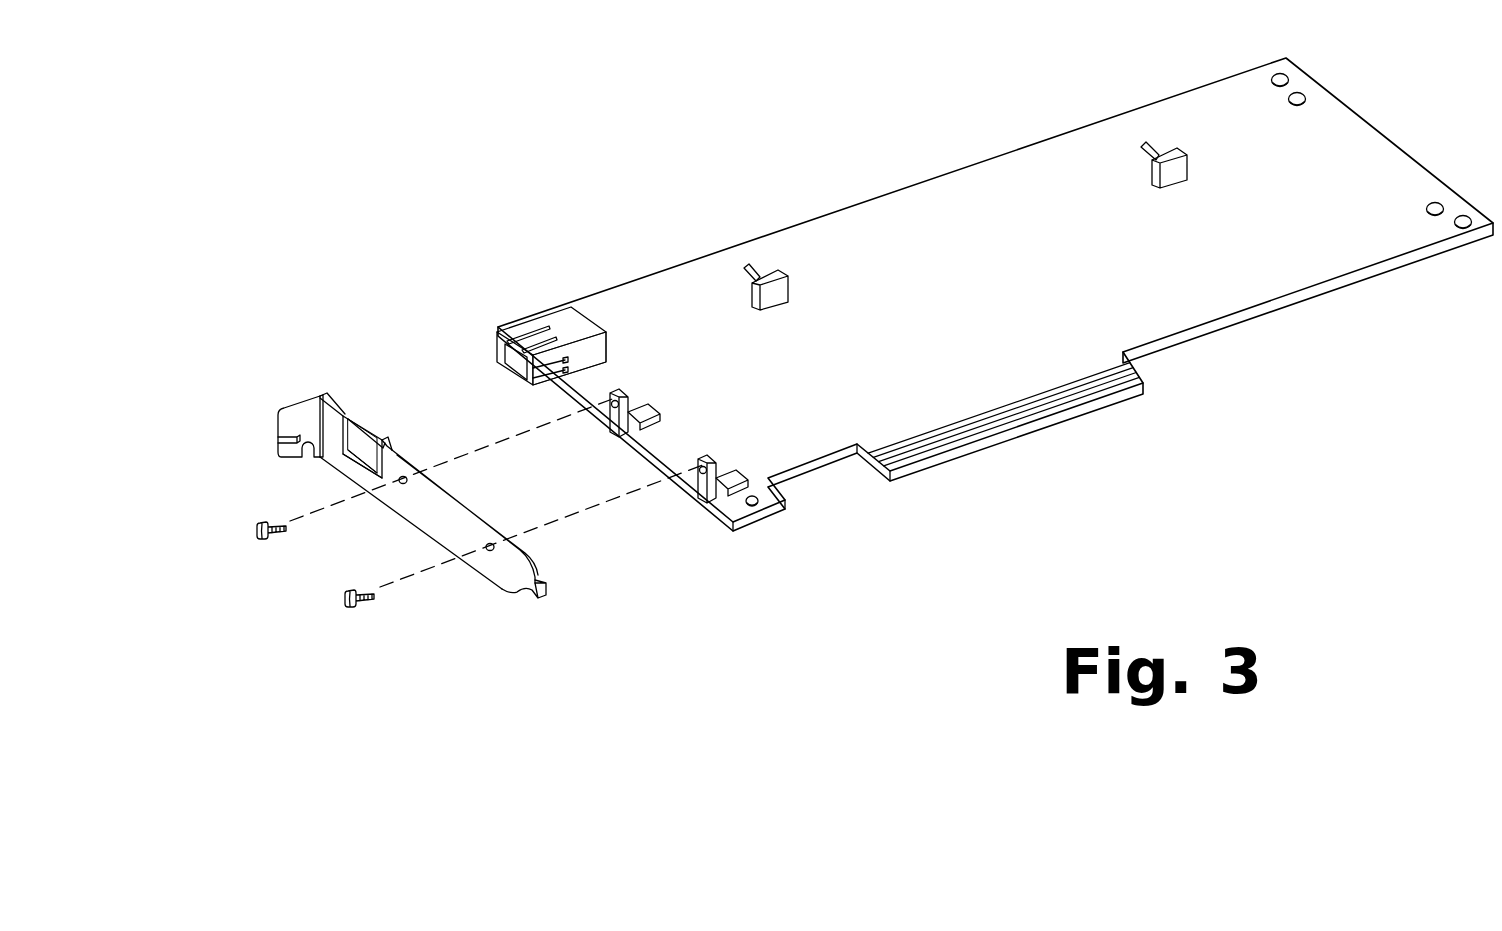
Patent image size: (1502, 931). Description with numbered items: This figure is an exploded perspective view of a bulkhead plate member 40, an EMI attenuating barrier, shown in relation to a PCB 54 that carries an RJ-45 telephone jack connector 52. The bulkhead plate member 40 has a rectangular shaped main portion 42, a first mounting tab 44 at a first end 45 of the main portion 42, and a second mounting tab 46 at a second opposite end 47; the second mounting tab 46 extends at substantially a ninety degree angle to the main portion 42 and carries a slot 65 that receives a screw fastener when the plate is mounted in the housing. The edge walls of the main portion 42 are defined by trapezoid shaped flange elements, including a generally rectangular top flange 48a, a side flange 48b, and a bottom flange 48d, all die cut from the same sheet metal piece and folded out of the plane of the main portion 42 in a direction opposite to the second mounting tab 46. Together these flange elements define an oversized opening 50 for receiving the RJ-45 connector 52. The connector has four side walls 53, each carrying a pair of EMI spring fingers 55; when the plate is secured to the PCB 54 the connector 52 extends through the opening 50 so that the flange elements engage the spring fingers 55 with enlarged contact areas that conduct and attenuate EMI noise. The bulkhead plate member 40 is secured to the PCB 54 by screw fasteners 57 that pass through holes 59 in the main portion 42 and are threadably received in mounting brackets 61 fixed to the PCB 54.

The bulkhead plate member 40 is at (406, 474).
The main portion 42 is at (445, 517).
The first mounting tab 44 is at (555, 582).
The first end 45 is at (540, 550).
The second mounting tab 46 is at (236, 407).
The second opposite end 47 is at (324, 394).
The top flange 48a is at (388, 433).
The side flange 48b is at (370, 466).
The bottom flange 48d is at (388, 453).
The oversized opening 50 is at (360, 433).
The RJ-45 telephone jack connector 52 is at (629, 276).
The side walls 53 is at (618, 356).
The PCB 54 is at (898, 184).
The EMI spring fingers 55 is at (542, 340).
The screw fasteners 57 is at (344, 600).
The holes 59 is at (491, 545).
The mounting brackets 61 is at (700, 470).
The slot 65 is at (278, 437).